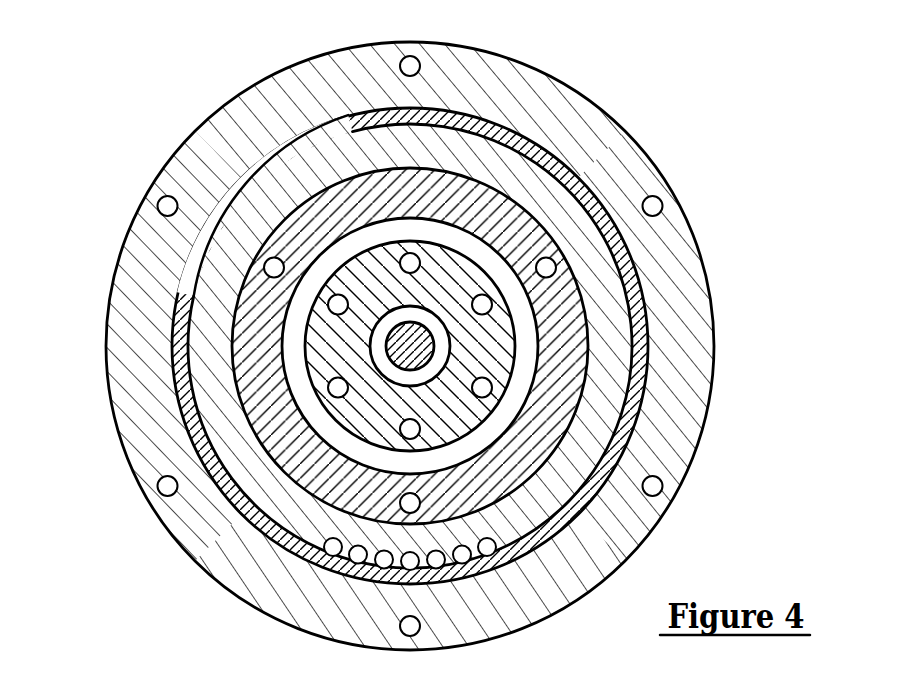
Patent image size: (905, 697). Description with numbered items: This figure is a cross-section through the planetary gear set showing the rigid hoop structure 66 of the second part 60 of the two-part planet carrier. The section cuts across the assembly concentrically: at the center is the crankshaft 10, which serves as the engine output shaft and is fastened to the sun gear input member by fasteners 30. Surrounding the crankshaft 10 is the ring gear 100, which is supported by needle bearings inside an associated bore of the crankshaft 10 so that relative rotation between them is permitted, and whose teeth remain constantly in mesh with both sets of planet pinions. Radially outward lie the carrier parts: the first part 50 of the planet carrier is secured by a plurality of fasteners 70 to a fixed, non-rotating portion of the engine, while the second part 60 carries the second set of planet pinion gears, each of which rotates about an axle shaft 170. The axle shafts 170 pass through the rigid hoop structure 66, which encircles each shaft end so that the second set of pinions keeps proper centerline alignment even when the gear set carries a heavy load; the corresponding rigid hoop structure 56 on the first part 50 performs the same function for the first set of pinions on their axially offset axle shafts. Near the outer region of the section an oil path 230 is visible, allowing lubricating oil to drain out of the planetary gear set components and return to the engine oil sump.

The crankshaft 10 is at (430, 304).
The fasteners 30 is at (410, 262).
The first part of planet carrier 50 is at (346, 68).
The rigid hoop structure 56 is at (607, 323).
The second part of planet carrier 60 is at (404, 185).
The rigid hoop structure 66 is at (313, 213).
The fasteners 70 is at (419, 61).
The ring gear 100 is at (418, 352).
The axle shaft 170 is at (272, 267).
The oil path 230 is at (333, 552).